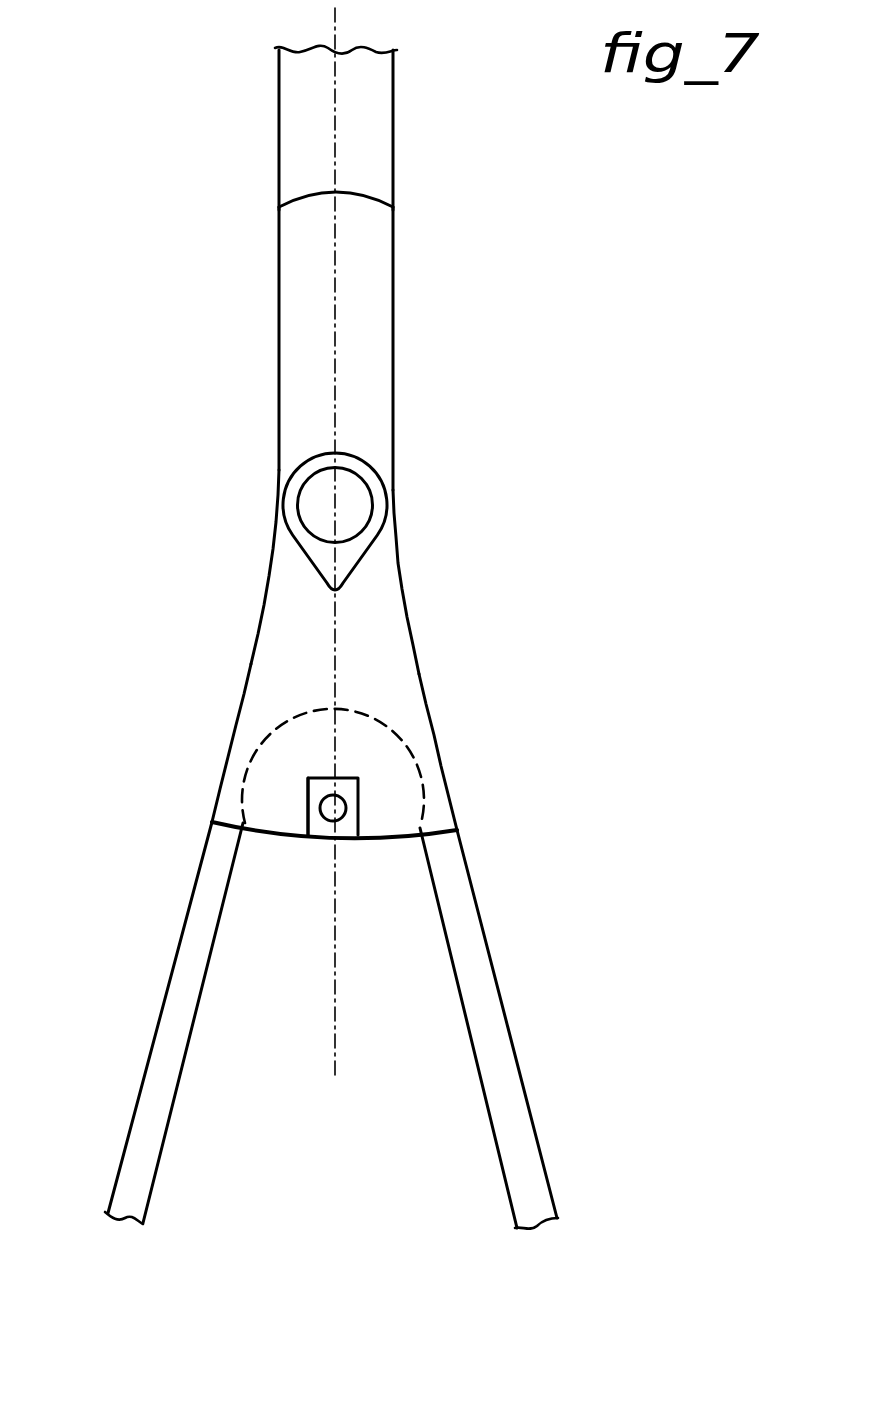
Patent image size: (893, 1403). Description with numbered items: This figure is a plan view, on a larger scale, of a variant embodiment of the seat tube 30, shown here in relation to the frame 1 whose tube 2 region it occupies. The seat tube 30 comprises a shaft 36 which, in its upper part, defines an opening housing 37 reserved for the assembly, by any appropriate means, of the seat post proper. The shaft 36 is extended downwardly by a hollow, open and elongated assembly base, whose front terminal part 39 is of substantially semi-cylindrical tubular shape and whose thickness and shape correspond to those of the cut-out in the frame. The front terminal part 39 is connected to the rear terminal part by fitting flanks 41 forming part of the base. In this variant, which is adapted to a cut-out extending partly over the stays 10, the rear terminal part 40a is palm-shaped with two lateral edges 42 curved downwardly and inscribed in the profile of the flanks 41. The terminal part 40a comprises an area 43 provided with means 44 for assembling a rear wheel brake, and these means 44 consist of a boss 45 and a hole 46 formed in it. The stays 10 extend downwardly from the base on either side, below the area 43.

The bicycle frame fork assembly 1 is at (258, 177).
The steering tube 2 is at (375, 100).
The stays 10 is at (162, 1080).
The seat tube 30 is at (417, 445).
The shaft 36 is at (300, 548).
The opening housing 37 is at (357, 497).
The front terminal part 39 is at (365, 235).
The terminal part 40a is at (368, 772).
The fitting flanks 41 is at (393, 340).
The flared crown portions 42 is at (220, 786).
The area 43 is at (385, 813).
The means for assembling a rear wheel brake 44 is at (302, 807).
The boss 45 is at (306, 776).
The hole 46 is at (329, 819).